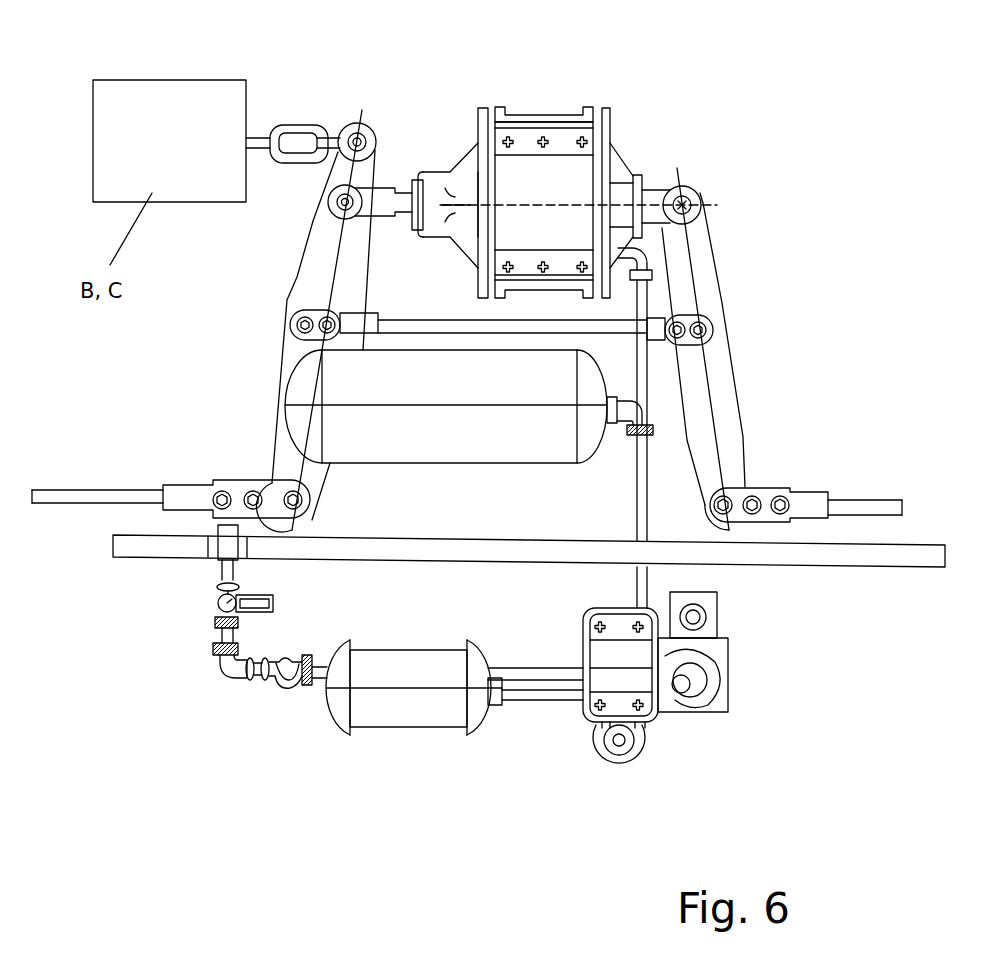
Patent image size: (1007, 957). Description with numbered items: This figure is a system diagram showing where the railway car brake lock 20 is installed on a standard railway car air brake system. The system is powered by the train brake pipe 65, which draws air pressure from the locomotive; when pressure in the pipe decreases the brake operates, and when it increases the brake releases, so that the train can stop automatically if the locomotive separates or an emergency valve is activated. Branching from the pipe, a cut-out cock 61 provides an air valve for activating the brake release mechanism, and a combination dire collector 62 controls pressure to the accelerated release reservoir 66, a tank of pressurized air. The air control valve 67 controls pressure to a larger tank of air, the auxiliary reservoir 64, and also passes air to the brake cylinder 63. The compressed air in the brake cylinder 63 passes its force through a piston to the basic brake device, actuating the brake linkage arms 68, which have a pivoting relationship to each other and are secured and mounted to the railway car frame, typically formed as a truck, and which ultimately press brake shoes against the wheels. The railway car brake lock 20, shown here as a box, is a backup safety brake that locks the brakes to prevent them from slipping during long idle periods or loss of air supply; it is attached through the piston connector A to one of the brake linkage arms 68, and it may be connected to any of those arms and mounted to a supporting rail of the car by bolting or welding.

The railway car brake lock 20 is at (145, 102).
The piston connector A is at (288, 128).
The brake cylinder 63 is at (543, 152).
The brake linkage arms 68 is at (318, 280).
The auxiliary reservoir 64 is at (500, 440).
The train brake pipe 65 is at (788, 555).
The cut-out cock 61 is at (215, 607).
The combination dire collector 62 is at (275, 687).
The accelerated release reservoir 66 is at (395, 707).
The air control valve 67 is at (703, 708).